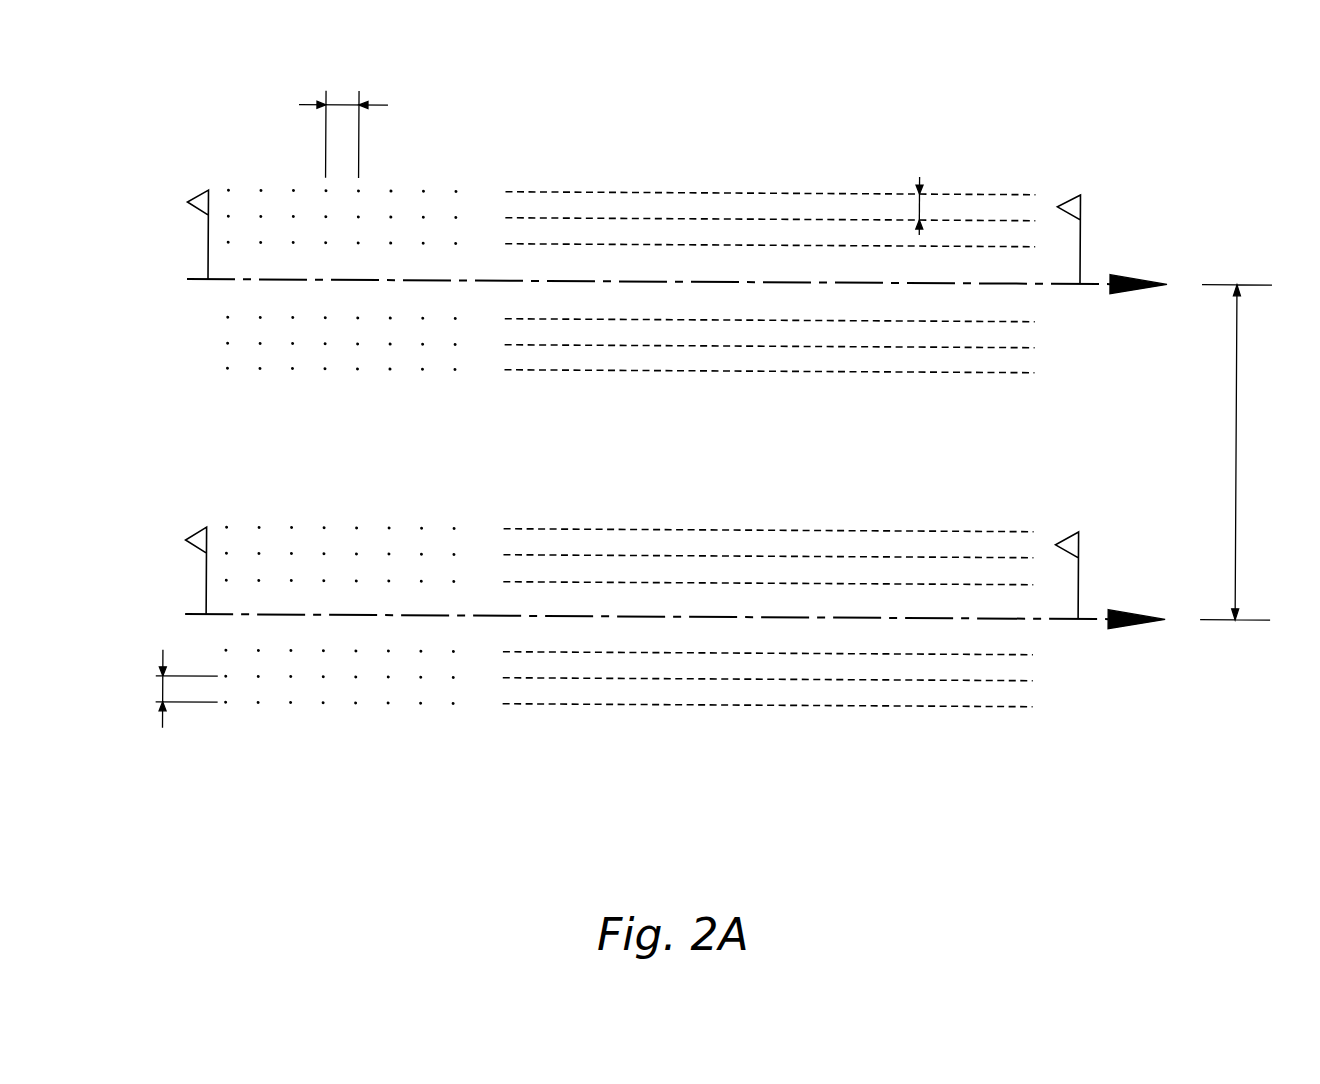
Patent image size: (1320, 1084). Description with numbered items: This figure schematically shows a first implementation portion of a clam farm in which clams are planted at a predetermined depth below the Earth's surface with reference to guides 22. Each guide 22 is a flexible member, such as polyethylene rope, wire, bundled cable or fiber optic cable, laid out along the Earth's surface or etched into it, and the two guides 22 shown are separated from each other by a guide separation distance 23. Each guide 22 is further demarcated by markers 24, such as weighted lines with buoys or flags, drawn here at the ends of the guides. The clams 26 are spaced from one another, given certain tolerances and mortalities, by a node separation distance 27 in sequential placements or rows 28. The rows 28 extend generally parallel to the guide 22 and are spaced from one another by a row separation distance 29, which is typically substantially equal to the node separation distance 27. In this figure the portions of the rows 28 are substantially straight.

The guide 22 is at (1090, 280).
The guide separation distance 23 is at (1237, 449).
The marker 24 is at (199, 196).
The clam 26 is at (262, 190).
The node separation distance 27 is at (344, 103).
The row 28 is at (620, 241).
The row separation distance 29 is at (920, 203).